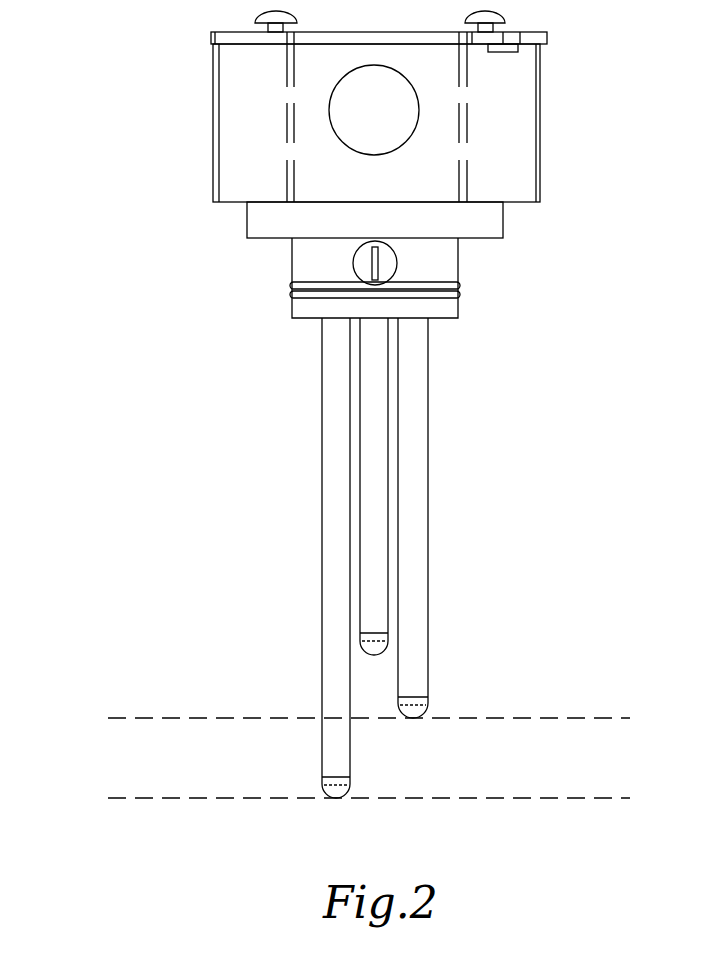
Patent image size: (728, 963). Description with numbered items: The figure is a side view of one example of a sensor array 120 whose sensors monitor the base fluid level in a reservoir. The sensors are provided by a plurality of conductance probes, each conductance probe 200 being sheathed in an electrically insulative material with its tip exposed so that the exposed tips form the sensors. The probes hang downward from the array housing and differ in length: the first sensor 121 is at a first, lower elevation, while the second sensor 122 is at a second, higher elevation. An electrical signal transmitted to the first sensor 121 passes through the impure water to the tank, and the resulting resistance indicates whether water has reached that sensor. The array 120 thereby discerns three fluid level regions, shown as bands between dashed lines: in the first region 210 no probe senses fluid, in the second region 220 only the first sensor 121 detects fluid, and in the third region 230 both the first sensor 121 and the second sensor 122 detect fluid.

The sensor array 120 is at (98, 82).
The conductance probe 200 is at (322, 398).
The first sensor 121 is at (336, 798).
The second sensor 122 is at (413, 718).
The first region 210 is at (620, 846).
The second region 220 is at (615, 768).
The third region 230 is at (622, 682).